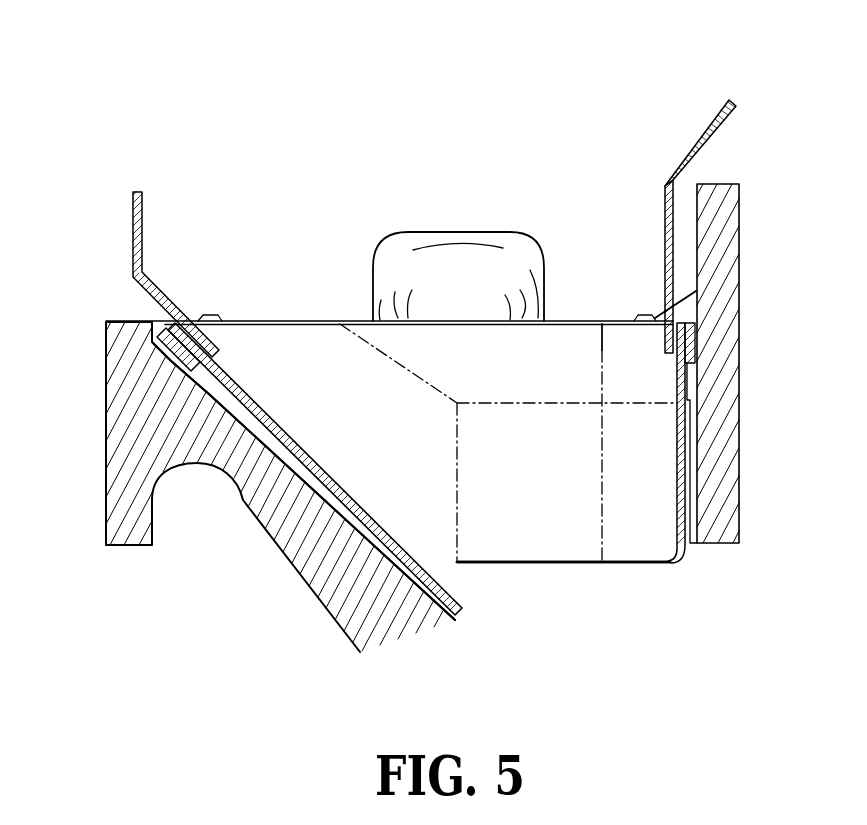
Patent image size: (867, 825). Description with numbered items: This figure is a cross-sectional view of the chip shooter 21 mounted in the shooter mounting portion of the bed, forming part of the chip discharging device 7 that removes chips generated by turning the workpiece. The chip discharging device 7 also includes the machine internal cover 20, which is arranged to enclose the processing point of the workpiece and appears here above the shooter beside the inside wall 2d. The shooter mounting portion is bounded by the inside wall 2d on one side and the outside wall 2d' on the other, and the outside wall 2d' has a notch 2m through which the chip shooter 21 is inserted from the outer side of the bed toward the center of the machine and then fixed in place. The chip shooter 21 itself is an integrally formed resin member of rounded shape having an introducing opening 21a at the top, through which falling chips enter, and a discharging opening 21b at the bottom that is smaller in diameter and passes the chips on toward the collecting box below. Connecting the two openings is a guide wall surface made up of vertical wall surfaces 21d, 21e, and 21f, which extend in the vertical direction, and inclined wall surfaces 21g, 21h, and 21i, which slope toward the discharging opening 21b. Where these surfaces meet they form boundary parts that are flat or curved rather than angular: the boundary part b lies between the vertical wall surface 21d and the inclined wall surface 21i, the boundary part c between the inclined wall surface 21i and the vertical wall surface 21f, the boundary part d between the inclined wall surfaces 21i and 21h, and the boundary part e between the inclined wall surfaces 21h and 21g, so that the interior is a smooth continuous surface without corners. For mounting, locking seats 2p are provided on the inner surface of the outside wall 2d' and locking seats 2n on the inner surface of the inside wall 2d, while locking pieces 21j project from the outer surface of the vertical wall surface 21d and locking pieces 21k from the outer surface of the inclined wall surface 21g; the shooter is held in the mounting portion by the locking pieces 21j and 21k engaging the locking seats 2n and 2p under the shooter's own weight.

The chip discharging device 7 is at (217, 218).
The machine internal cover 20 is at (688, 158).
The chip shooter 21 is at (570, 287).
The introducing opening 21a is at (322, 338).
The discharging opening 21b is at (557, 543).
The vertical wall surface 21d is at (680, 447).
The vertical wall surface 21e is at (460, 357).
The vertical wall surface 21f is at (618, 340).
The inclined wall surface 21g is at (275, 413).
The inclined wall surface 21h is at (508, 480).
The inclined wall surface 21i is at (633, 480).
The locking piece 21j is at (697, 352).
The locking piece 21k is at (170, 362).
The inside wall 2d is at (752, 363).
The outside wall 2d' is at (240, 487).
The notch 2m is at (125, 320).
The locking seat 2n is at (692, 380).
The locking seat 2p is at (200, 385).
The boundary part b is at (677, 530).
The boundary part c is at (643, 403).
The boundary part d is at (600, 530).
The boundary part e is at (462, 532).